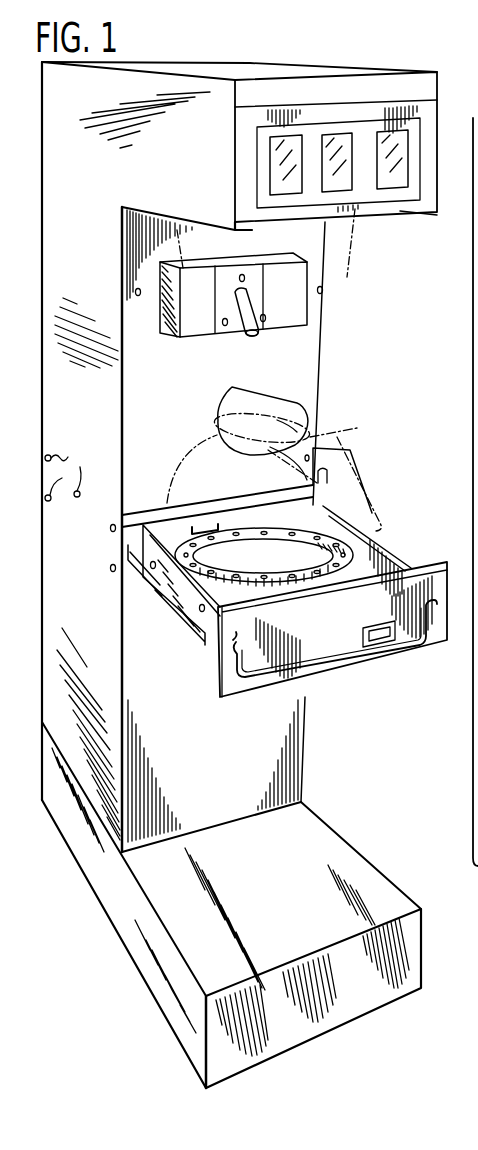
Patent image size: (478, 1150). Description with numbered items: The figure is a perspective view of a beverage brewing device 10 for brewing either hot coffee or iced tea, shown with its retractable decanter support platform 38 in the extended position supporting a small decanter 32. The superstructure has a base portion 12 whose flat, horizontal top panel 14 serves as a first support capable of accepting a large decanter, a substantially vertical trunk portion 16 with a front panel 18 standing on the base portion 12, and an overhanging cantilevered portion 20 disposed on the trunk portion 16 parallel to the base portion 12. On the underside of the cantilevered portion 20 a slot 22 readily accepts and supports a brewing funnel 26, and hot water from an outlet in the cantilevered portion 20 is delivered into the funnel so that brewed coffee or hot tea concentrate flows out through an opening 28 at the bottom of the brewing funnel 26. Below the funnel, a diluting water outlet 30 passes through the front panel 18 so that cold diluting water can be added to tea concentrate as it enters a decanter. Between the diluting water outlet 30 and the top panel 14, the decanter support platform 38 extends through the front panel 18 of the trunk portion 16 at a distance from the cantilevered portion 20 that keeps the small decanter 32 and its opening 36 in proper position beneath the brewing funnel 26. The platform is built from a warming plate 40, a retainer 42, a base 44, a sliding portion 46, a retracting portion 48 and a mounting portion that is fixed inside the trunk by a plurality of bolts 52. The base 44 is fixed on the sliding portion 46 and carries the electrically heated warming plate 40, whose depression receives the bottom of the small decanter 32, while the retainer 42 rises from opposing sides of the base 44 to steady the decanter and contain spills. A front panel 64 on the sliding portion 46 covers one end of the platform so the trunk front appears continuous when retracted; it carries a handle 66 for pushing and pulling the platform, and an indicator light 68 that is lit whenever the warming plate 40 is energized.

The beverage brewing device 10 is at (263, 50).
The base portion 12 is at (157, 1008).
The top panel 14 is at (343, 855).
The trunk portion 16 is at (42, 183).
The front panel 18 is at (278, 757).
The cantilevered portion 20 is at (300, 62).
The slot 22 is at (425, 216).
The brewing funnel 26 is at (350, 276).
The opening 28 is at (265, 333).
The diluting water outlet 30 is at (180, 288).
The small decanter 32 is at (322, 437).
The opening of the small decanter 36 is at (297, 403).
The decanter support platform 38 is at (261, 582).
The warming plate 40 is at (386, 540).
The retainer 42 is at (122, 528).
The base 44 is at (122, 556).
The sliding portion 46 is at (187, 640).
The retracting portion 48 is at (140, 616).
The bolts 52 is at (68, 474).
The front panel 64 is at (433, 640).
The handle 66 is at (330, 662).
The indicator light 68 is at (380, 640).